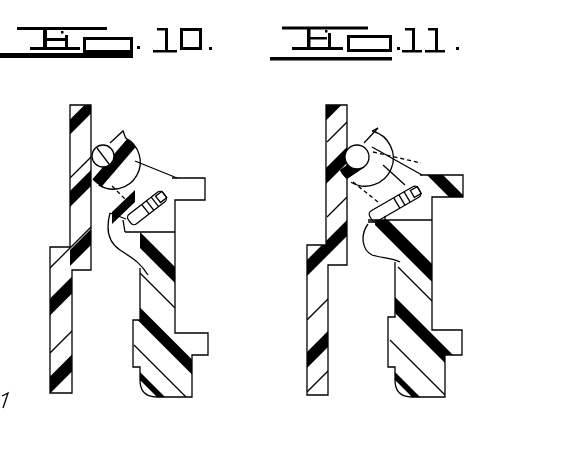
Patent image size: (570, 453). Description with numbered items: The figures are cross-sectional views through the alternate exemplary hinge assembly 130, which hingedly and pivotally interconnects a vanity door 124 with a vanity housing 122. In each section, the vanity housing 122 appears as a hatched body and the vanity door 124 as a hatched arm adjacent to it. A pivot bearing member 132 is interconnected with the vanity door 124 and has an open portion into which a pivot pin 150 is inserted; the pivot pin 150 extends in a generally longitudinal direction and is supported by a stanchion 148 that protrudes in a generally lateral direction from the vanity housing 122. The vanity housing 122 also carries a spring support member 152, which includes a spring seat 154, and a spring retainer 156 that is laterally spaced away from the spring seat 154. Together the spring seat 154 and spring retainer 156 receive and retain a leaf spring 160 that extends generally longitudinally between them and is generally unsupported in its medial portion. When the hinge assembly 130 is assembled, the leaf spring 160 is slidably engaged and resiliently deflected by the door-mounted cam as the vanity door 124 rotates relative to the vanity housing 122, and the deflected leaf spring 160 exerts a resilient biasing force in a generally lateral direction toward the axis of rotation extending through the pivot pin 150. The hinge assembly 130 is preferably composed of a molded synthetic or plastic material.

In FIG. 10, the vanity housing 122 is at (180, 377).
In FIG. 11, the vanity housing 122 is at (428, 385).
In FIG. 10, the vanity door 124 is at (58, 388).
In FIG. 11, the vanity door 124 is at (312, 388).
In FIG. 10, the hinge assembly 130 is at (162, 126).
In FIG. 11, the hinge assembly 130 is at (415, 127).
In FIG. 10, the pivot bearing member 132 is at (118, 135).
In FIG. 11, the pivot bearing member 132 is at (392, 143).
In FIG. 10, the stanchion 148 is at (143, 177).
In FIG. 11, the stanchion 148 is at (393, 172).
In FIG. 10, the pivot pin 150 is at (92, 156).
In FIG. 11, the pivot pin 150 is at (358, 150).
In FIG. 11, the spring support member 152 is at (378, 258).
In FIG. 11, the spring seat 154 is at (368, 222).
In FIG. 10, the spring retainer 156 is at (165, 190).
In FIG. 11, the spring retainer 156 is at (402, 200).
In FIG. 10, the leaf spring 160 is at (168, 189).
In FIG. 11, the leaf spring 160 is at (404, 209).